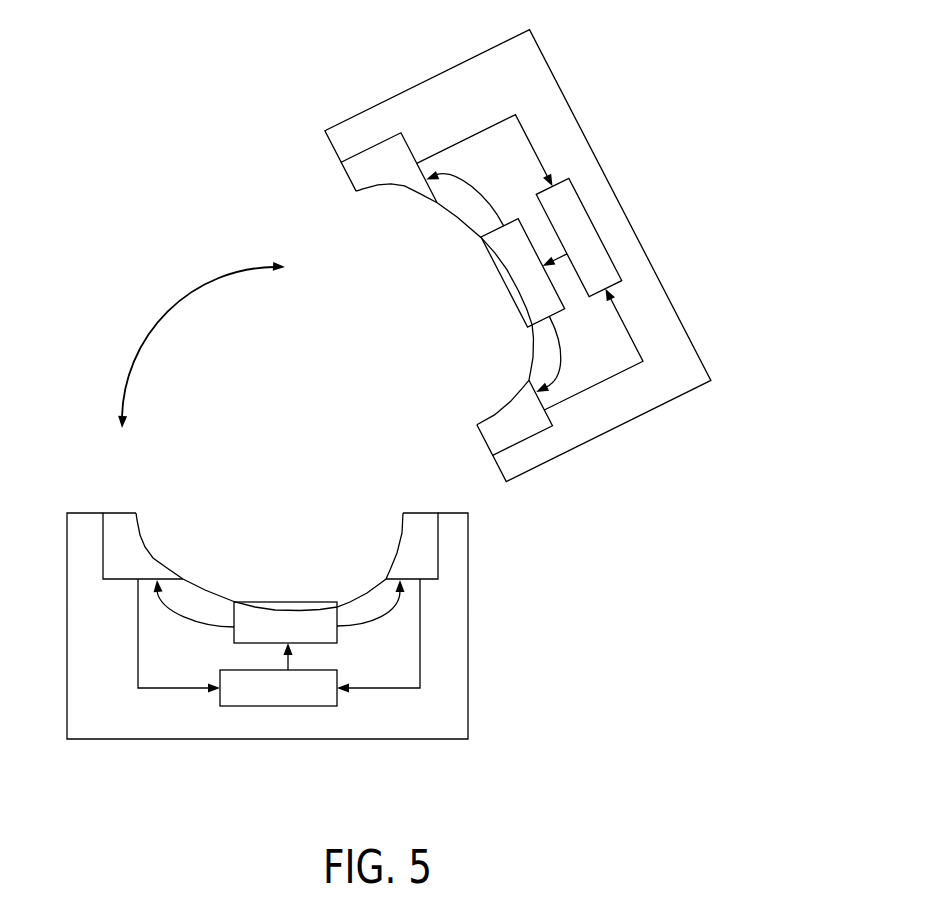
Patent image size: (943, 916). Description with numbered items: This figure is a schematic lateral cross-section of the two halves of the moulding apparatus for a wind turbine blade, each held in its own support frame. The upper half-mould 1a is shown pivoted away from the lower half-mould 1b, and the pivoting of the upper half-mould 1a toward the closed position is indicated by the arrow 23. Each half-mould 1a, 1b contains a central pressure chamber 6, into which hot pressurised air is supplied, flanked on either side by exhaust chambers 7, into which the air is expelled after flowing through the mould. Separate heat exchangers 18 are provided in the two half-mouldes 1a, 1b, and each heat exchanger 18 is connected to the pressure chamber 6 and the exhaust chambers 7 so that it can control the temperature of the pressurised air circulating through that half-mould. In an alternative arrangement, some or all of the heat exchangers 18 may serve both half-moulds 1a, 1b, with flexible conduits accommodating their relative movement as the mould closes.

The upper half-mould 1a is at (402, 92).
The lower half-mould 1b is at (468, 632).
The exhaust chamber 7 is at (353, 173).
The pressure chamber 6 is at (505, 260).
The heat exchanger 18 is at (590, 212).
The arrow 23 is at (167, 312).